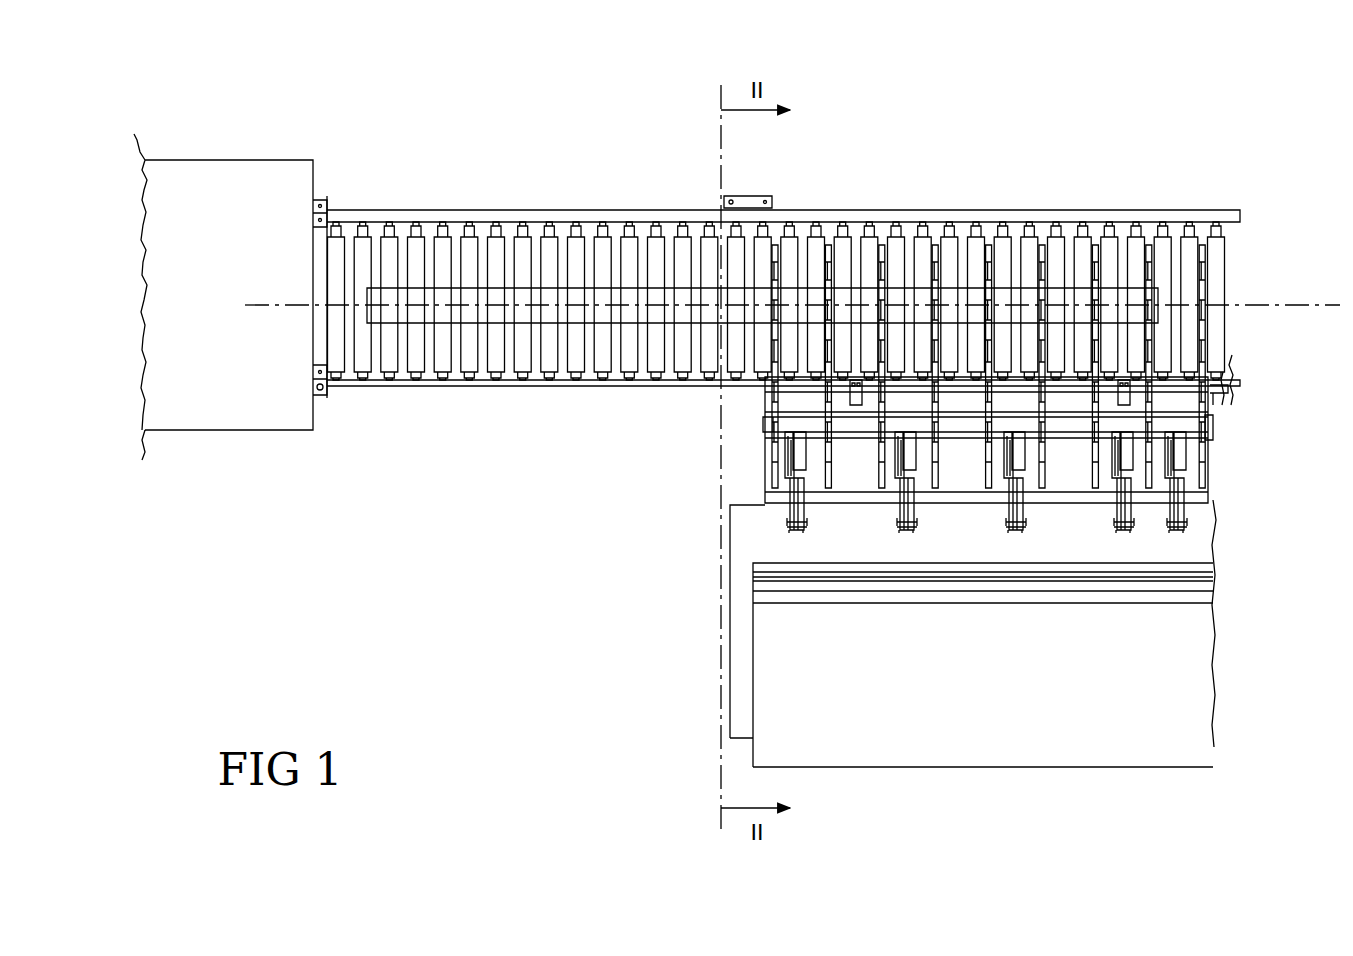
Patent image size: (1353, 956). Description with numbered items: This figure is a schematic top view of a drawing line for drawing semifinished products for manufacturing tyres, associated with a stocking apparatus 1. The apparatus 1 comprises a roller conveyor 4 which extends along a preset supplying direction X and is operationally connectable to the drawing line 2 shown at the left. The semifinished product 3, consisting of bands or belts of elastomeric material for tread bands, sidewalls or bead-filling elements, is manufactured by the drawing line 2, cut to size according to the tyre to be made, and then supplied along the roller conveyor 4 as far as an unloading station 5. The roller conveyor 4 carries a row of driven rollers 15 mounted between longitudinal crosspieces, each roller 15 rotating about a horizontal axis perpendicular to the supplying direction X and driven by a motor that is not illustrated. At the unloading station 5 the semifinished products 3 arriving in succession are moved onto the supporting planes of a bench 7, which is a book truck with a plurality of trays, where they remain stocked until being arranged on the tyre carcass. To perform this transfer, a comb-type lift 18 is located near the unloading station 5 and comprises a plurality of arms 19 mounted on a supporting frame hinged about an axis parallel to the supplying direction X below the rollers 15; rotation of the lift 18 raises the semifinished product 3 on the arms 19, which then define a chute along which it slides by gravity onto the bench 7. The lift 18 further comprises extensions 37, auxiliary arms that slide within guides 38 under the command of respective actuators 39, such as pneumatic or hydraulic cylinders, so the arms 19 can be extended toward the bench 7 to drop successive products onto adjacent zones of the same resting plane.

The apparatus 1 is at (824, 299).
The drawing line 2 is at (208, 383).
The semifinished product 3 is at (490, 305).
The roller conveyor 4 is at (1147, 190).
The unloading station 5 is at (748, 448).
The bench 7 is at (690, 650).
The driven rollers 15 is at (1030, 245).
The lift 18 is at (1216, 425).
The arms 19 is at (822, 256).
The extensions 37 is at (798, 545).
The guides 38 is at (805, 492).
The actuator 39 is at (797, 470).
The supplying direction X is at (423, 316).